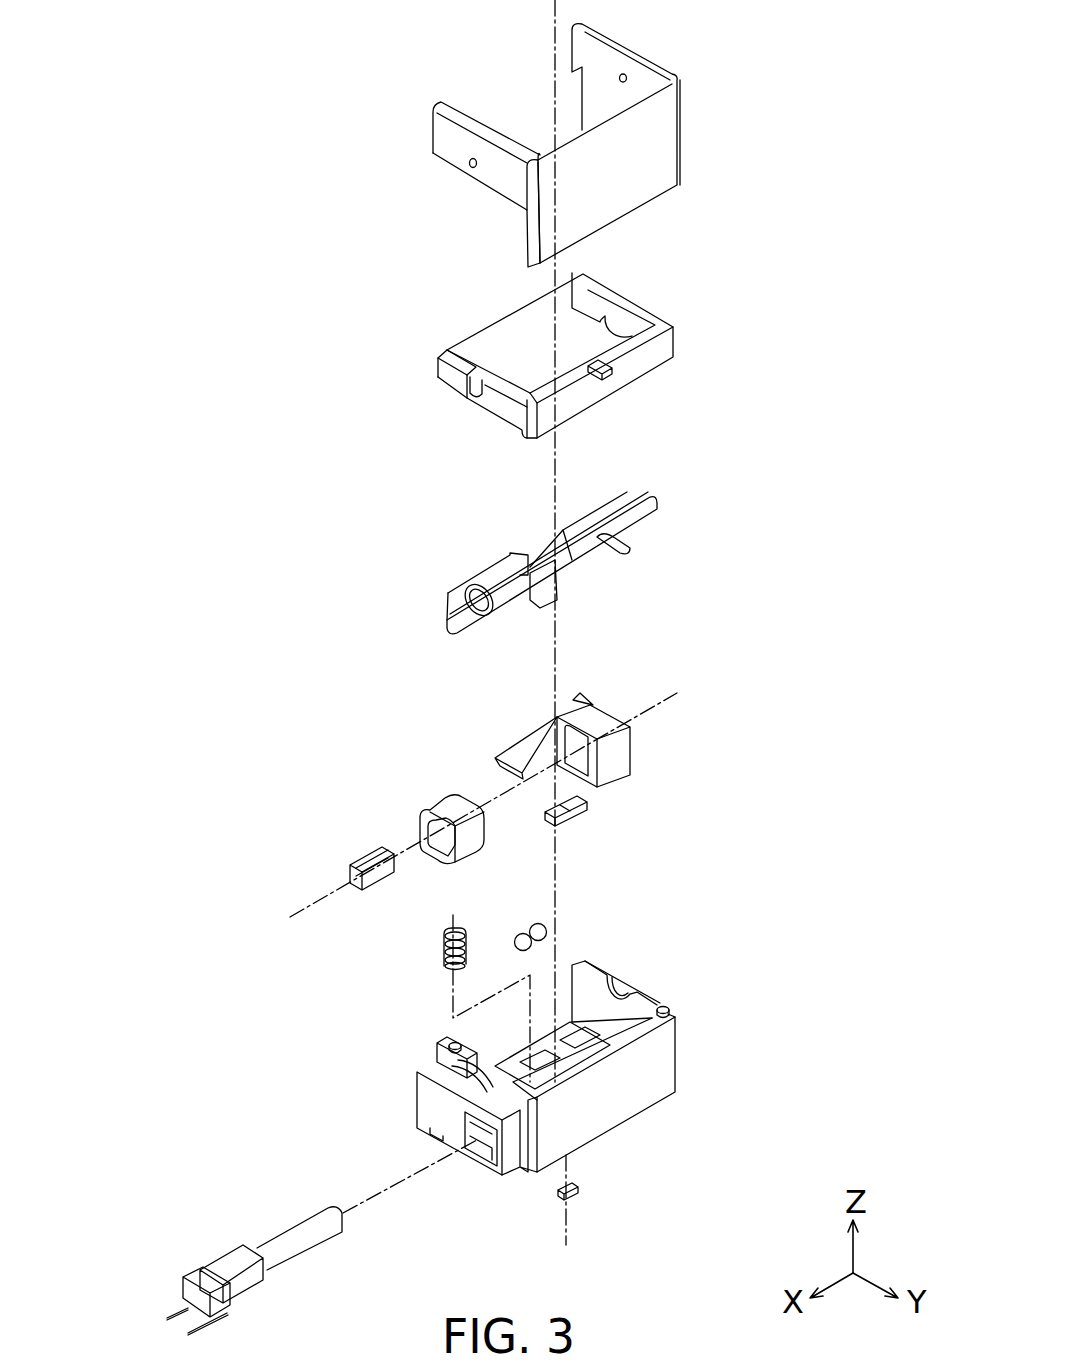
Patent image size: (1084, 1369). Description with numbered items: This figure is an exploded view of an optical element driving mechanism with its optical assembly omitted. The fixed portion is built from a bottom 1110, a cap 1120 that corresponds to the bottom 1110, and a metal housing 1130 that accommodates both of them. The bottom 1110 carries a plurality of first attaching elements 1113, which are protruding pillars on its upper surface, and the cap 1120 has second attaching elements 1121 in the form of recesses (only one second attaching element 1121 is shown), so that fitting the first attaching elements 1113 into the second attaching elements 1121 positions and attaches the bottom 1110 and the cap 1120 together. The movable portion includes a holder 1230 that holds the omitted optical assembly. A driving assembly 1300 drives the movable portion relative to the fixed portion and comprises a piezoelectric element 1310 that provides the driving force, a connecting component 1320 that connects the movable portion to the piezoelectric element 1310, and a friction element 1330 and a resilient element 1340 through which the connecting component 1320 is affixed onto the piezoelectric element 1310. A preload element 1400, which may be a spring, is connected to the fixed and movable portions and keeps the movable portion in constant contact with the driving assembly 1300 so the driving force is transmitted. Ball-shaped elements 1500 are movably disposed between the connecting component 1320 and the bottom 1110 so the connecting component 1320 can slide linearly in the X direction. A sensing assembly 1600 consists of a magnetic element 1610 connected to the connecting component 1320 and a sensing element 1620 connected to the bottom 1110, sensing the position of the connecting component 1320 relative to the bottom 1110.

The bottom 1110 is at (653, 1062).
The first attaching elements 1113 is at (447, 1042).
The cap 1120 is at (647, 360).
The second attaching elements 1121 is at (450, 380).
The housing 1130 is at (647, 152).
The holder 1230 is at (650, 505).
The driving assembly 1300 is at (160, 102).
The piezoelectric element 1310 is at (230, 1260).
The connecting component 1320 is at (620, 752).
The friction element 1330 is at (365, 858).
The resilient element 1340 is at (443, 803).
The preload element 1400 is at (433, 953).
The ball-shaped elements 1500 is at (522, 933).
The sensing assembly 1600 is at (160, 263).
The magnetic element 1610 is at (600, 823).
The sensing element 1620 is at (578, 1192).